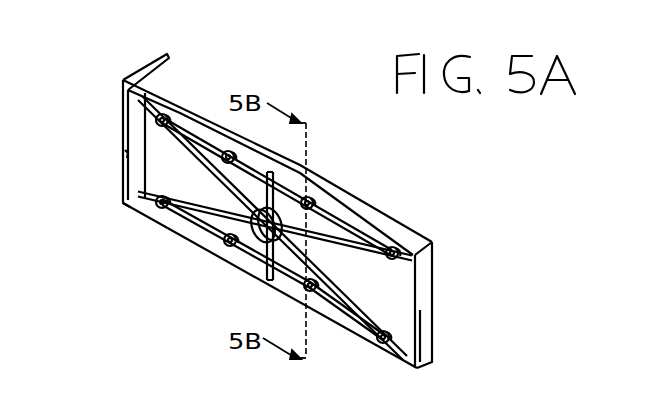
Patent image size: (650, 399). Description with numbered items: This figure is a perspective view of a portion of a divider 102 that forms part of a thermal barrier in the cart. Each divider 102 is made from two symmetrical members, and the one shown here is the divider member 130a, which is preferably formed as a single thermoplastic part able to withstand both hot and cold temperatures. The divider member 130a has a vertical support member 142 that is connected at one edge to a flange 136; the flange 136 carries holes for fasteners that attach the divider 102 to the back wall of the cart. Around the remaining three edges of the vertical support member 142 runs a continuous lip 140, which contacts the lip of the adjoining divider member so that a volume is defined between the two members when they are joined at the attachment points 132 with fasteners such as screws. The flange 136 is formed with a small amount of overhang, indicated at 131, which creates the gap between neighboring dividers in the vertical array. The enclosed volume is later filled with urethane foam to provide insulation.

The overhang 131 is at (123, 80).
The flange 136 is at (153, 51).
The attachment points 132 is at (164, 198).
The vertical support member 142 is at (338, 216).
The continuous lip 140 is at (405, 235).
The divider member 130a is at (172, 237).
The divider 102 is at (512, 398).